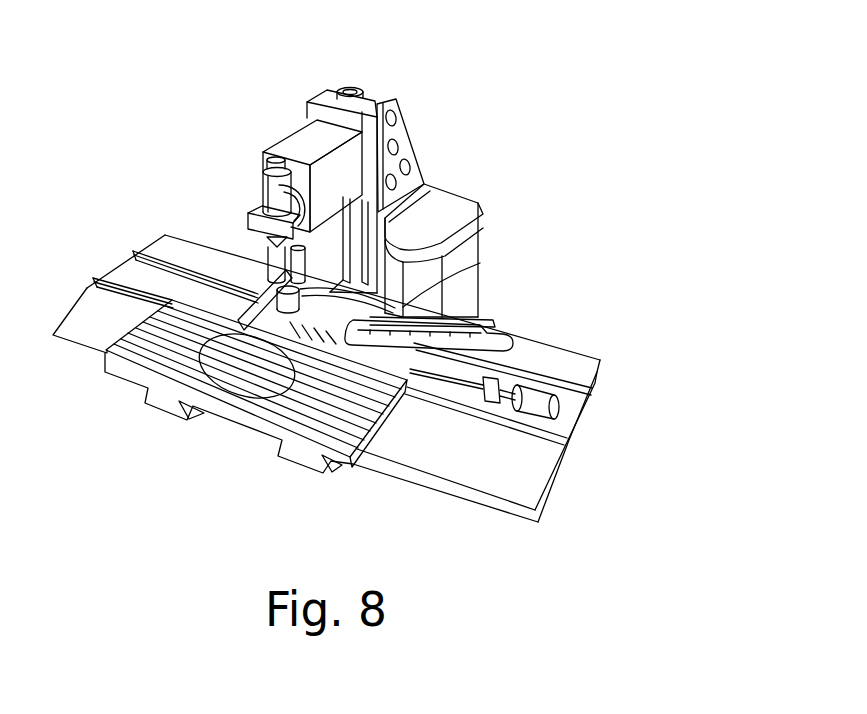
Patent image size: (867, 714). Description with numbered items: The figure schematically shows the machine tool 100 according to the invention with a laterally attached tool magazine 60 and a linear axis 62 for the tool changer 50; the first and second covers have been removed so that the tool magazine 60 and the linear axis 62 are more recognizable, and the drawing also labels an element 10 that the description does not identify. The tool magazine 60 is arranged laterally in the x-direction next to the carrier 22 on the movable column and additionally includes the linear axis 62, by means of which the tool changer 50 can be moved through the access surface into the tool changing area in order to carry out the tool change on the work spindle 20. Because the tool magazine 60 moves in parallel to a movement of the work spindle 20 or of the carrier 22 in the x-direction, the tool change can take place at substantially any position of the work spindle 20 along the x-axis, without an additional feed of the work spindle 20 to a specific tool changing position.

The machine tool 100 is at (449, 87).
The bed 10 is at (355, 475).
The work spindle 20 is at (244, 196).
The carrier 22 is at (295, 152).
The tool changer 50 is at (278, 326).
The tool magazine 60 is at (503, 214).
The linear axis 62 is at (516, 314).